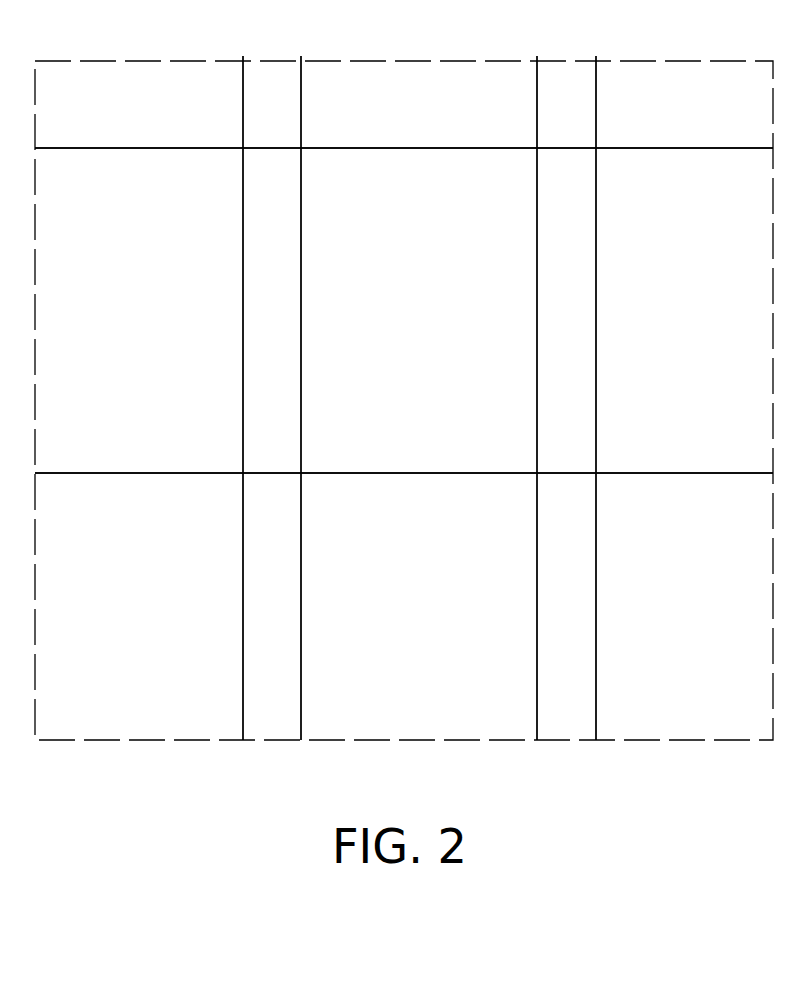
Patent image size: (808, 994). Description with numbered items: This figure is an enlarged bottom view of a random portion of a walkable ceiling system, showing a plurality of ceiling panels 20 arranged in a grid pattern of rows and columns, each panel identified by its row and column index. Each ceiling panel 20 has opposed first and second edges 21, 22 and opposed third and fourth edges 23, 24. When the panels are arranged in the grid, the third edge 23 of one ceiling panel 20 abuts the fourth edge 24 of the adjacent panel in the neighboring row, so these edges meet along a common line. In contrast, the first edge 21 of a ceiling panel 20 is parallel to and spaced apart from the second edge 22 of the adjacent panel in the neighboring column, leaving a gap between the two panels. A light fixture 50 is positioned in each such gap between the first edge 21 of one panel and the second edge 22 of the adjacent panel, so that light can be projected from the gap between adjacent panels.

The ceiling panel 20 is at (404, 400).
The first edge 21 is at (301, 253).
The second edge 22 is at (243, 280).
The third edge 23 is at (177, 148).
The fourth edge 24 is at (113, 148).
The light fixture 50 is at (270, 90).